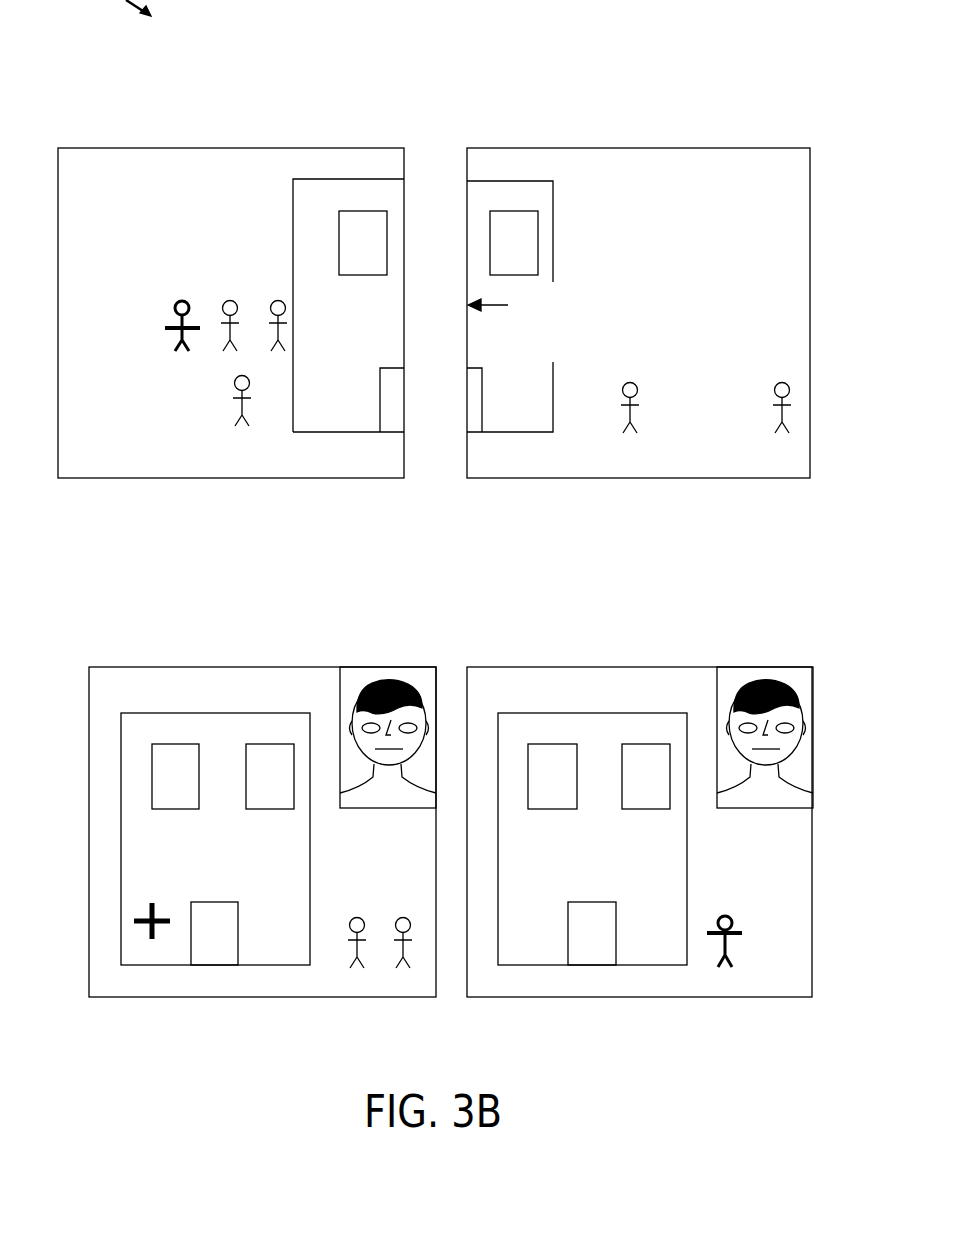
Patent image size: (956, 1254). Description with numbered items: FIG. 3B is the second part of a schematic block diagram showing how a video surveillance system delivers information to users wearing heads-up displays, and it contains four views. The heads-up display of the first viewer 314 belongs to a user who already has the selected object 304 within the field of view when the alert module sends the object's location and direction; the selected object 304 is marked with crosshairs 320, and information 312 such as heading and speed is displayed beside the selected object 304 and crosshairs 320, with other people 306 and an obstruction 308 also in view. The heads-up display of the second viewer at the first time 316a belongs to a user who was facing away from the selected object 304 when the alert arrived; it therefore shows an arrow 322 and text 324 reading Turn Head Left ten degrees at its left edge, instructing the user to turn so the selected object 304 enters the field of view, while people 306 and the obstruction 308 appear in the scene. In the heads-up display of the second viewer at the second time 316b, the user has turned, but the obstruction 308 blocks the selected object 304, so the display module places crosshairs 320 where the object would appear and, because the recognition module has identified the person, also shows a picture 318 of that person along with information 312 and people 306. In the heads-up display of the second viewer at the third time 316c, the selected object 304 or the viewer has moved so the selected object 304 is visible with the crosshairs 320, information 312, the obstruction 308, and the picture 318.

The selected object 304 is at (420, 668).
The people 306 is at (506, 635).
The obstruction 308 is at (404, 620).
The information 312 is at (449, 562).
The heads-up display of viewer 1 314 is at (214, 126).
The heads-up display of viewer 2 at time 1 316a is at (584, 129).
The heads-up display of viewer 2 at time 2 316b is at (241, 649).
The heads-up display of viewer 2 at time 3 316c is at (617, 649).
The picture 318 is at (576, 705).
The crosshairs 320 is at (449, 628).
The arrow 322 is at (493, 307).
The text 324 is at (618, 320).